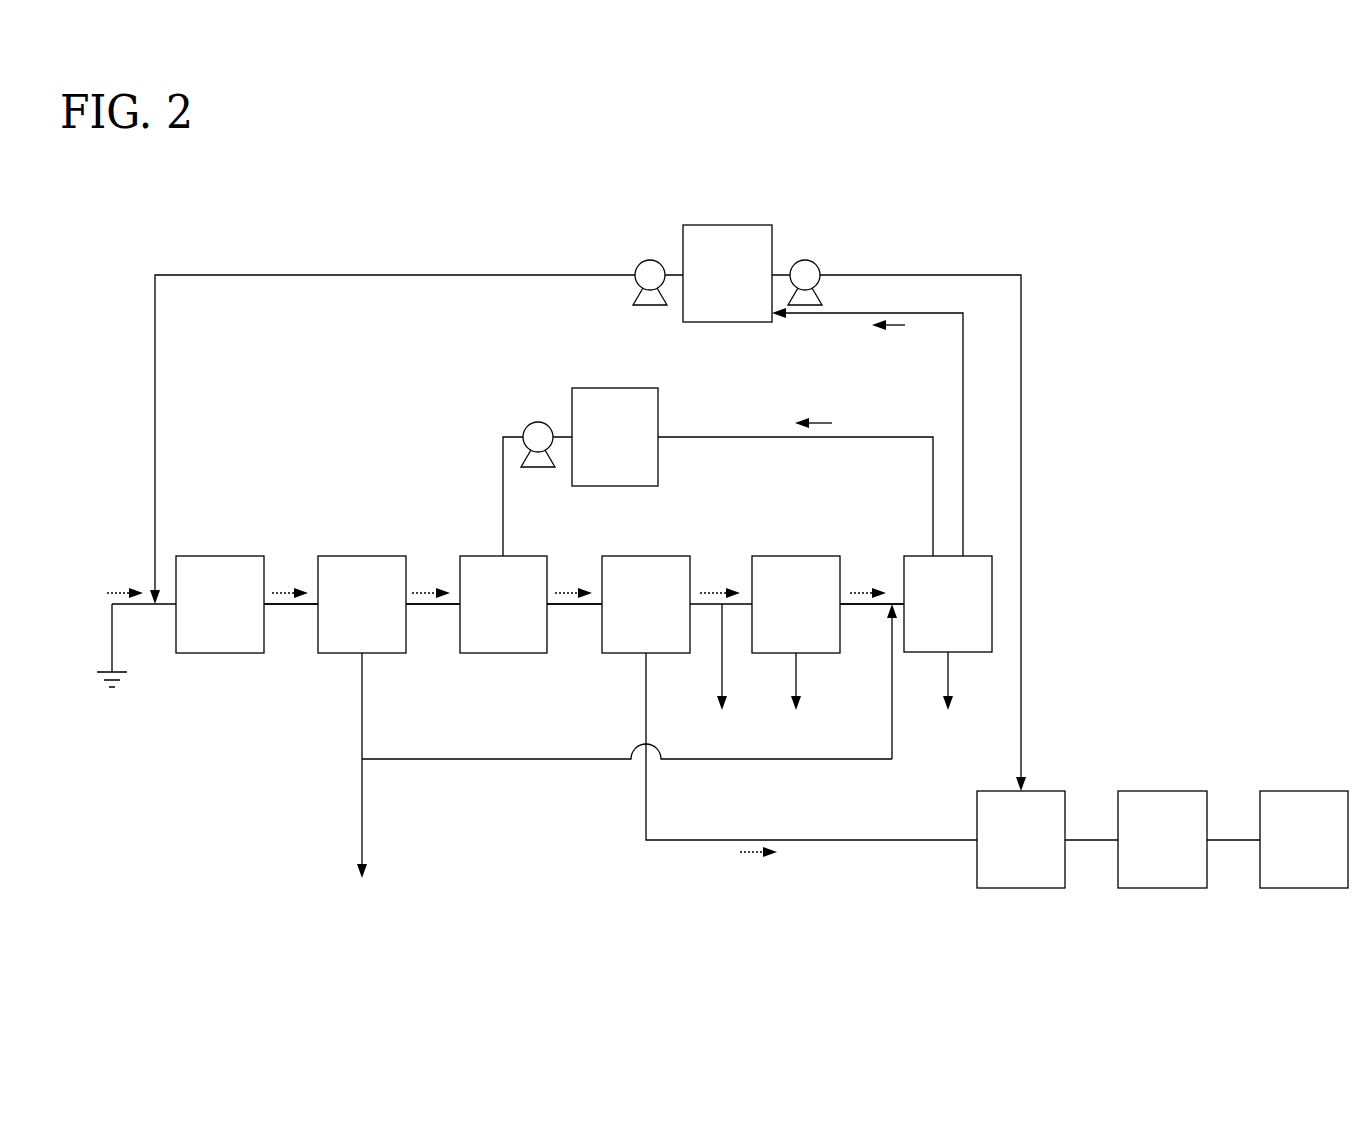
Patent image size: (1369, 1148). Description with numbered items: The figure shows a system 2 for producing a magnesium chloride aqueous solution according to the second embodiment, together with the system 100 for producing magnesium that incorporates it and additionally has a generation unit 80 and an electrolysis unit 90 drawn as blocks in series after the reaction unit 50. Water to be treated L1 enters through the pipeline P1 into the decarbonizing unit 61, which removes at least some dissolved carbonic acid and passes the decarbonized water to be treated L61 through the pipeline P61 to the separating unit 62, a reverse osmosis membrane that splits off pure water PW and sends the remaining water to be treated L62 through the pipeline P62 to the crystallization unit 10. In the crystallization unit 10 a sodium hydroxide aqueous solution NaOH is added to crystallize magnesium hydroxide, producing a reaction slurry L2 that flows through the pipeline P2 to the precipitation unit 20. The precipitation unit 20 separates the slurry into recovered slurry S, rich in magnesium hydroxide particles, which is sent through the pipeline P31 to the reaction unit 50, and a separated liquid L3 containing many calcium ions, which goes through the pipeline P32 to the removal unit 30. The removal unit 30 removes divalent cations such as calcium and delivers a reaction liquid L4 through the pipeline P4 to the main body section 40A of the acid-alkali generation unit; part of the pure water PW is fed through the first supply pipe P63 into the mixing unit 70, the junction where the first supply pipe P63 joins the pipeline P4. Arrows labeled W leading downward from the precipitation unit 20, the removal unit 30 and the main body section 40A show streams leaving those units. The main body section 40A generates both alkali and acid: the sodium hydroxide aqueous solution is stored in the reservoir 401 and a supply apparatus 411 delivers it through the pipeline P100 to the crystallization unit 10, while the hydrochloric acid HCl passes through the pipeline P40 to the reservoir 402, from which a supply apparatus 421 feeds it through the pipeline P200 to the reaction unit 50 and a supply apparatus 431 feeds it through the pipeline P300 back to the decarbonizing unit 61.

The system for producing a magnesium chloride aqueous solution 2 is at (293, 803).
The system for producing magnesium 100 is at (1205, 662).
The crystallization unit 10 is at (481, 554).
The precipitation unit 20 is at (645, 554).
The removal unit 30 is at (797, 554).
The main body section 40A is at (978, 554).
The reaction unit 50 is at (1040, 789).
The decarbonizing unit 61 is at (218, 554).
The separating unit 62 is at (361, 554).
The mixing unit 70 is at (893, 600).
The generation unit 80 is at (1162, 789).
The electrolysis unit 90 is at (1303, 789).
The reservoir 401 is at (615, 386).
The reservoir 402 is at (728, 224).
The supply apparatus 411 is at (535, 422).
The supply apparatus 421 is at (808, 259).
The supply apparatus 431 is at (648, 259).
The pipeline P1 is at (112, 641).
The pipeline P2 is at (572, 612).
The pipeline P4 is at (862, 612).
The pipeline P31 is at (645, 706).
The pipeline P32 is at (708, 618).
The pipeline P61 is at (287, 612).
The pipeline P62 is at (429, 612).
The first supply pipe P63 is at (493, 761).
The pipeline P100 is at (728, 436).
The pipeline P200 is at (1022, 412).
The pipeline P300 is at (421, 273).
The pipeline P40 is at (848, 313).
The water to be treated L1 is at (116, 591).
The reaction slurry L2 is at (570, 591).
The separated liquid L3 is at (716, 591).
The reaction liquid L4 is at (860, 591).
The water to be treated L61 is at (286, 591).
The water to be treated L62 is at (428, 591).
The waste water W is at (835, 695).
The recovered slurry S is at (750, 858).
The pure water PW is at (363, 782).
The hydrochloric acid HCl is at (900, 327).
The sodium hydroxide aqueous solution NaOH is at (832, 423).